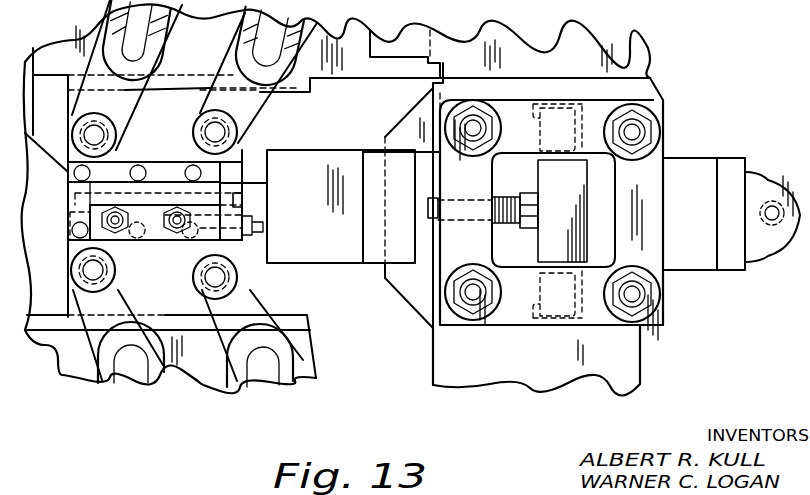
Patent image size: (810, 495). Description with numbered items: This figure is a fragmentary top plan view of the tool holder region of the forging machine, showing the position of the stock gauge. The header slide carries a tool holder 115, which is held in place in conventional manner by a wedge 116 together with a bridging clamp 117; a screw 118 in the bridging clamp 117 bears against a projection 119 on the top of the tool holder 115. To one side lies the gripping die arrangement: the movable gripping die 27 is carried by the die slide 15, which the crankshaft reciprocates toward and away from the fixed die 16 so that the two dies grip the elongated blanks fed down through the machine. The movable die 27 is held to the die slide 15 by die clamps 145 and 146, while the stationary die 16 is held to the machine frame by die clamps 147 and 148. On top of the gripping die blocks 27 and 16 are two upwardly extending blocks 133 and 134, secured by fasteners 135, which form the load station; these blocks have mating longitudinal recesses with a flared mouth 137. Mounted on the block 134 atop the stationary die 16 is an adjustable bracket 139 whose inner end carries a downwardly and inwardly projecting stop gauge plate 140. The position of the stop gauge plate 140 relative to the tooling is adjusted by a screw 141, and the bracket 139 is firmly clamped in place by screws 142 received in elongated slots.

The die slide 15 is at (343, 72).
The fixed die 16 is at (154, 276).
The movable gripping die 27 is at (154, 131).
The tool holder 115 is at (348, 260).
The wedge 116 is at (730, 163).
The bridging clamp 117 is at (647, 233).
The screw 118 is at (433, 198).
The projection 119 is at (573, 207).
The upwardly extending projection or block 133 is at (162, 175).
The upwardly extending projection or block 134 is at (122, 240).
The fasteners 135 is at (68, 177).
The flared mouth 137 is at (70, 215).
The adjustable bracket 139 is at (85, 240).
The stop gauge plate 140 is at (240, 200).
The screw 141 is at (253, 234).
The screws 142 is at (177, 232).
The die clamp 145 is at (103, 97).
The die clamp 146 is at (227, 97).
The die clamp 147 is at (101, 316).
The die clamp 148 is at (217, 363).